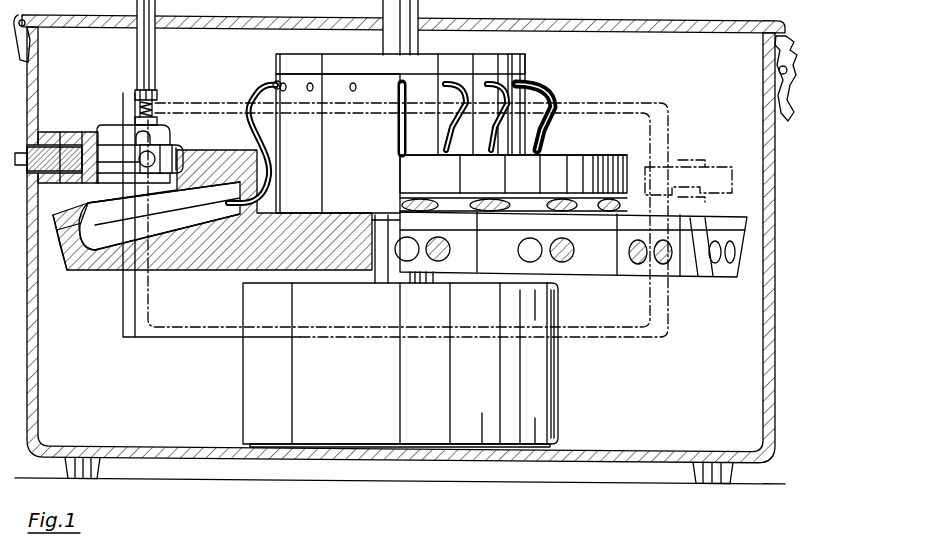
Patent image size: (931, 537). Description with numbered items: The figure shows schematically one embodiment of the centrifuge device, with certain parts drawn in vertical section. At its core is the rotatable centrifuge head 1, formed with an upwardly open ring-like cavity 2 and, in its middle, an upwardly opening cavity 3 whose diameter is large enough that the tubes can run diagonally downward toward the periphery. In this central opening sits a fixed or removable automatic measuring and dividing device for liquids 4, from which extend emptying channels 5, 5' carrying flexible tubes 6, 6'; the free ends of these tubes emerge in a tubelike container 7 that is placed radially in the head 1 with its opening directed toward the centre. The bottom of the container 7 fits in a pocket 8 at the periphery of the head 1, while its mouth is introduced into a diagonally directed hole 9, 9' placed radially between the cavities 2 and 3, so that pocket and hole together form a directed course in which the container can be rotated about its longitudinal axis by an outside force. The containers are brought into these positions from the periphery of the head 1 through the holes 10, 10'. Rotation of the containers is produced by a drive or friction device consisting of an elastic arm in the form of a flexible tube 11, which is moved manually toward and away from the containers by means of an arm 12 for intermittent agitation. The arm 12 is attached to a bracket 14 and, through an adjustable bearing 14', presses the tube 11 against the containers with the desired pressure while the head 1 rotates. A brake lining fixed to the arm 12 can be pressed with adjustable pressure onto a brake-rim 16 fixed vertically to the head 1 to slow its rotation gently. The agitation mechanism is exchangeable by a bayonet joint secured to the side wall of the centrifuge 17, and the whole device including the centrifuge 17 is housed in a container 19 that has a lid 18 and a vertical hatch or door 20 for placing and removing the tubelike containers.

The centrifuge head 1 is at (117, 266).
The ring-like cavity 2 is at (91, 212).
The cavity 3 is at (272, 188).
The measuring and dividing device for liquids 4 is at (298, 82).
The emptying channel 5 is at (305, 111).
The emptying channel 5' is at (351, 111).
The flexible tube 6 is at (267, 132).
The flexible tube 6' is at (504, 104).
The tubelike container 7 is at (100, 263).
The pocket 8 is at (83, 256).
The diagonally directed hole 9 is at (442, 183).
The diagonally directed hole 9' is at (595, 161).
The hole 10 is at (571, 268).
The hole 10' is at (626, 278).
The flexible tube 11 is at (168, 151).
The arm 12 is at (158, 69).
The bracket 14 is at (125, 138).
The adjustable bearing 14' is at (124, 92).
The brake-rim 16 is at (615, 168).
The centrifuge 17 is at (257, 383).
The lid 18 is at (753, 30).
The container 19 is at (767, 303).
The vertical hatch or door 20 is at (143, 333).